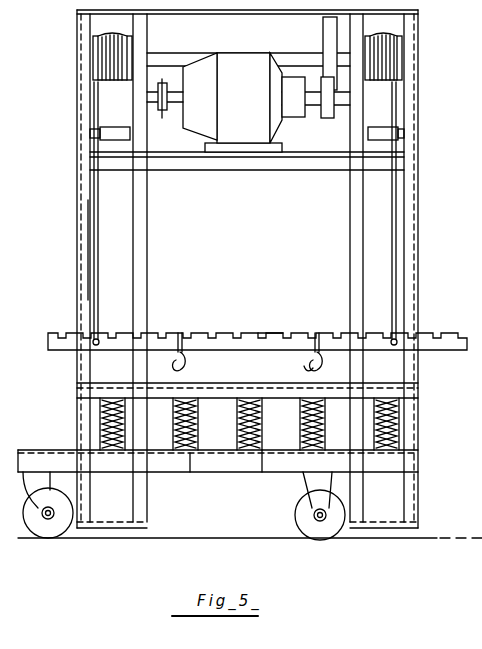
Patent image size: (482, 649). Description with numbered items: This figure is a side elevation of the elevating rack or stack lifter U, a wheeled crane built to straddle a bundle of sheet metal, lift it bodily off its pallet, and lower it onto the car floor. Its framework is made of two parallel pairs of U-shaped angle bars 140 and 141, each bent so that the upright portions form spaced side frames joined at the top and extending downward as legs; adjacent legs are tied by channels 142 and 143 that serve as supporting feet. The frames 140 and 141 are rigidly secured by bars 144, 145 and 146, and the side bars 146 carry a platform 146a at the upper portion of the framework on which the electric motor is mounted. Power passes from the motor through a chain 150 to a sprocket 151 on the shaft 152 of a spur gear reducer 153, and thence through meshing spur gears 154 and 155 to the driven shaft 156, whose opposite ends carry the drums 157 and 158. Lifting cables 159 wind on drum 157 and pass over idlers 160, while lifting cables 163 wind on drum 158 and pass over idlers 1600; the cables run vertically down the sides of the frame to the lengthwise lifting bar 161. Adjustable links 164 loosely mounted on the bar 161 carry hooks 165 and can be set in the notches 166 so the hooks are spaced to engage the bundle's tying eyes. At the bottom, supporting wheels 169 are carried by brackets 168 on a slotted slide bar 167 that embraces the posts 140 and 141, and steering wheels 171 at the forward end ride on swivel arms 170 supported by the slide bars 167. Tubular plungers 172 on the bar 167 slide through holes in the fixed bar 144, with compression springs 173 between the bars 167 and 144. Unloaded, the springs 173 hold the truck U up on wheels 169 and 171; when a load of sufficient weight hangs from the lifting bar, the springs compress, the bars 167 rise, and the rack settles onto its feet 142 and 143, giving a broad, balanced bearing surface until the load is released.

The U-shaped angle bar 140 is at (358, 215).
The U-shaped angle bar 141 is at (88, 247).
The channel 142 is at (405, 522).
The channel 143 is at (147, 520).
The bar 144 is at (393, 384).
The bar 145 is at (275, 13).
The side bar 146 is at (318, 170).
The platform 146a is at (197, 157).
The chain 150 is at (163, 112).
The sprocket 151 is at (157, 100).
The shaft 152 is at (181, 98).
The spur gear reducer 153 is at (243, 102).
The spur gear 154 is at (316, 118).
The spur gear 155 is at (330, 43).
The driven shaft 156 is at (167, 57).
The drum 157 is at (367, 35).
The drum 158 is at (100, 34).
The lifting cable 159 is at (395, 240).
The idler 160 is at (385, 130).
The idler 1600 is at (115, 128).
The lifting bar 161 is at (220, 332).
The lifting cable 163 is at (98, 210).
The adjustable link 164 is at (179, 332).
The hook 165 is at (313, 368).
The notch 166 is at (279, 333).
The slide bar 167 is at (182, 467).
The bracket 168 is at (312, 480).
The supporting wheel 169 is at (320, 537).
The swivel arm 170 is at (36, 482).
The steering wheel 171 is at (50, 538).
The tubular plunger 172 is at (270, 445).
The compression spring 173 is at (266, 412).
The stack lifter U is at (77, 300).